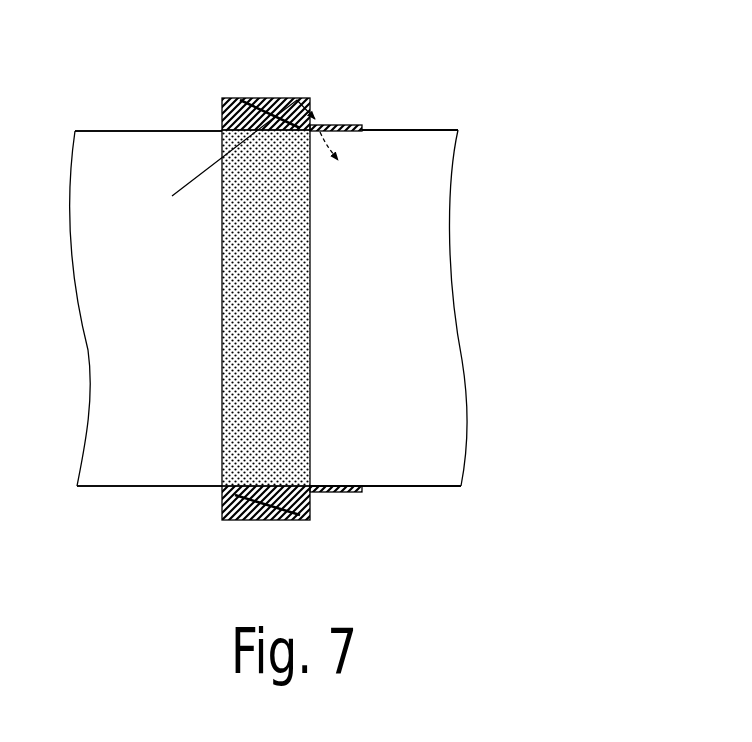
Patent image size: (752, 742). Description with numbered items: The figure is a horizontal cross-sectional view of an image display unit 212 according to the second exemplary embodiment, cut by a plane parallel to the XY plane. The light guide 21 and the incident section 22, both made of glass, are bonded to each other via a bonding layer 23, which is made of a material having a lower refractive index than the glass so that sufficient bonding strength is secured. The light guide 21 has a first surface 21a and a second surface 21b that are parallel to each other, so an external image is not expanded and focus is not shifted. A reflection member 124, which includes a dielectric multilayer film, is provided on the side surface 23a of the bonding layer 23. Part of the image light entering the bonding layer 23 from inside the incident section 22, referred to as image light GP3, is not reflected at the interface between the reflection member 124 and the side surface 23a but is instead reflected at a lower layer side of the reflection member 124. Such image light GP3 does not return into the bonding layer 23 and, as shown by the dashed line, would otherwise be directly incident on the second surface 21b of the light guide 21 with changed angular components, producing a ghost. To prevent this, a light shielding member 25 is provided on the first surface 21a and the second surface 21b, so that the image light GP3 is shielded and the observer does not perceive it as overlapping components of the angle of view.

The image display unit 212 is at (136, 86).
The incident section 22 is at (157, 474).
The light guide 21 is at (373, 474).
The first surface 21a is at (423, 488).
The second surface 21b is at (448, 126).
The bonding layer 23 is at (298, 360).
The side surface 23a is at (240, 115).
The reflection member 124 is at (262, 102).
The light shielding member 25 is at (348, 127).
The image light GP3 is at (191, 198).